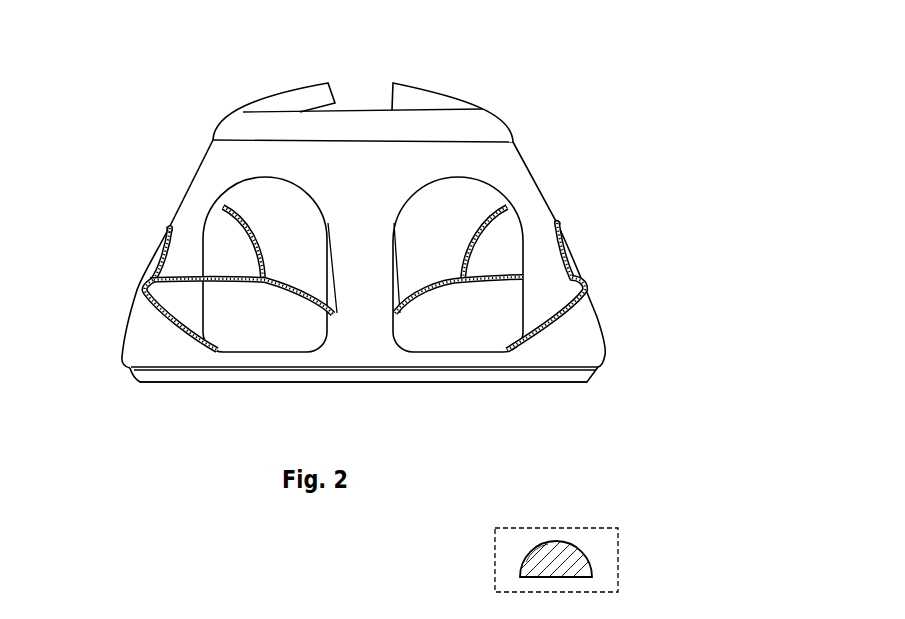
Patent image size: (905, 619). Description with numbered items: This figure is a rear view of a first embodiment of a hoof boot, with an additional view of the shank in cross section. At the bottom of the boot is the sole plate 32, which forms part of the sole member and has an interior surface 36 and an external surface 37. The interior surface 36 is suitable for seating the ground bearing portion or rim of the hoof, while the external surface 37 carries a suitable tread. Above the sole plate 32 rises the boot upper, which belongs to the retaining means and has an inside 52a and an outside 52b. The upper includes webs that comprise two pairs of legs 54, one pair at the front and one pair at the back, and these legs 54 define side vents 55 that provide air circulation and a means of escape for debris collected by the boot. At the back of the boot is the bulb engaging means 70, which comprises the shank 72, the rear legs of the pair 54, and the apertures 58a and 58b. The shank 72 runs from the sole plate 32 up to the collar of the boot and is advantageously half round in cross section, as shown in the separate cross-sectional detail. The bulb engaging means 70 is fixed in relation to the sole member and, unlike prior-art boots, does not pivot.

The sole plate 32 is at (573, 377).
The interior surface 36 is at (257, 346).
The external surface 37 is at (470, 383).
The inside 52a is at (390, 108).
The outside 52b is at (530, 163).
The legs 54 is at (187, 257).
The side vents 55 is at (168, 227).
The aperture 58a is at (390, 290).
The aperture 58b is at (203, 288).
The bulb engaging means 70 is at (68, 211).
The shank 72 is at (363, 277).